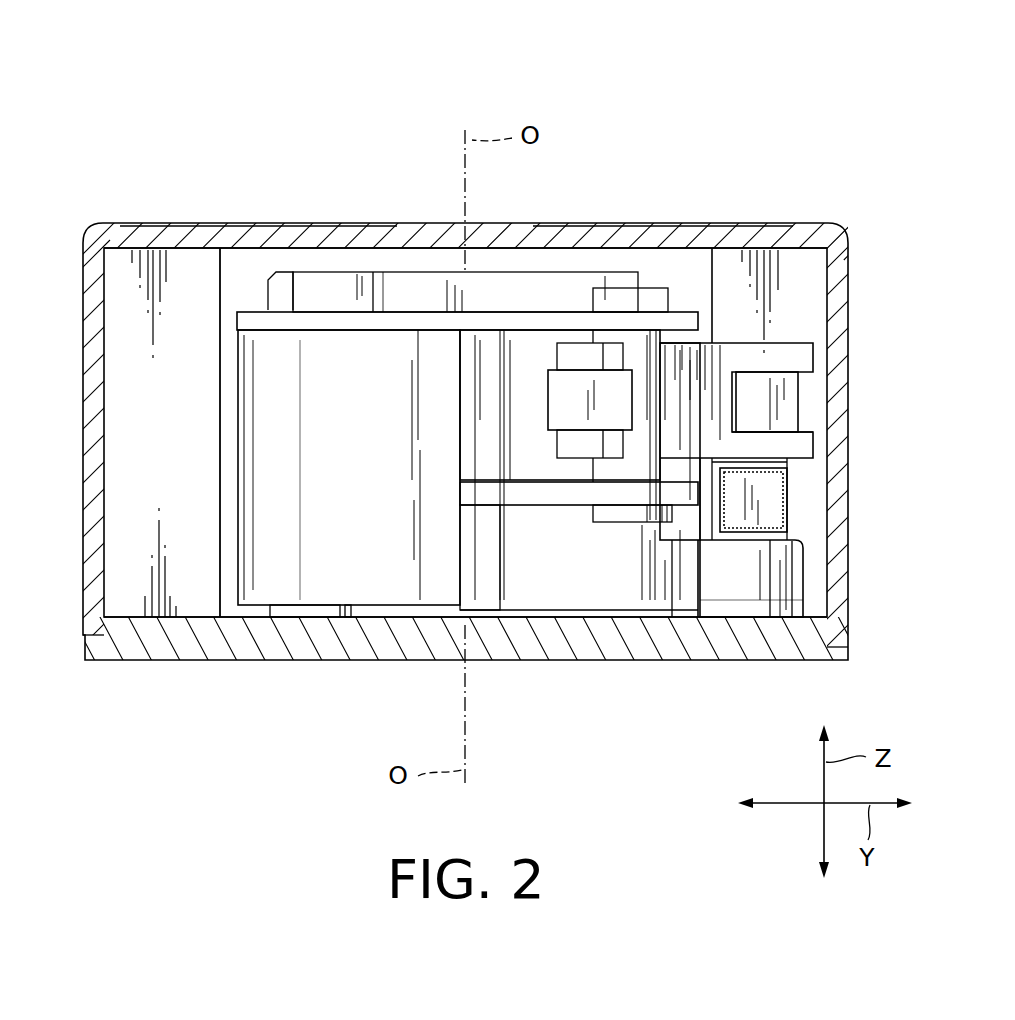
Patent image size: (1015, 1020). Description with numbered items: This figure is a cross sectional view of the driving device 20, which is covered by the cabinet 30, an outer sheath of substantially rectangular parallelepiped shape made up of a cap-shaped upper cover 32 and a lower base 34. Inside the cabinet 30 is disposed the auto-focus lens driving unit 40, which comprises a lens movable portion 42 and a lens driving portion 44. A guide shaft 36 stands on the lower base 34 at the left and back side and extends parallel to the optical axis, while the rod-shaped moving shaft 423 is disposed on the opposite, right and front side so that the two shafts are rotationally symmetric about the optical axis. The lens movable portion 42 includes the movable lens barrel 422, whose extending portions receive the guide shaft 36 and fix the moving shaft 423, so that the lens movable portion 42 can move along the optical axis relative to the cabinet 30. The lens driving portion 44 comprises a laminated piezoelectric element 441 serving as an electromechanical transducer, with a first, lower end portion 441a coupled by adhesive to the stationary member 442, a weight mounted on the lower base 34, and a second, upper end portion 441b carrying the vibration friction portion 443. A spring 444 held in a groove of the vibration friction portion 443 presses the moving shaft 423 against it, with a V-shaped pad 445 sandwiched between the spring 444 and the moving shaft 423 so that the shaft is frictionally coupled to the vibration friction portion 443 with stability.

The driving device 20 is at (685, 112).
The cabinet 30 is at (810, 222).
The upper cover 32 is at (840, 241).
The lower base 34 is at (655, 650).
The guide shaft 36 is at (278, 296).
The auto-focus lens driving unit 40 is at (430, 262).
The lens movable portion 42 is at (224, 456).
The movable lens barrel 422 is at (387, 578).
The rod-shaped moving shaft 423 is at (630, 468).
The lens driving portion 44 is at (792, 332).
The laminated piezoelectric element 441 is at (773, 497).
The first end portion 441a is at (760, 548).
The second end portion 441b is at (757, 457).
The stationary member 442 is at (752, 605).
The vibration friction portion 443 is at (800, 357).
The spring 444 is at (560, 397).
The pad 445 is at (578, 360).